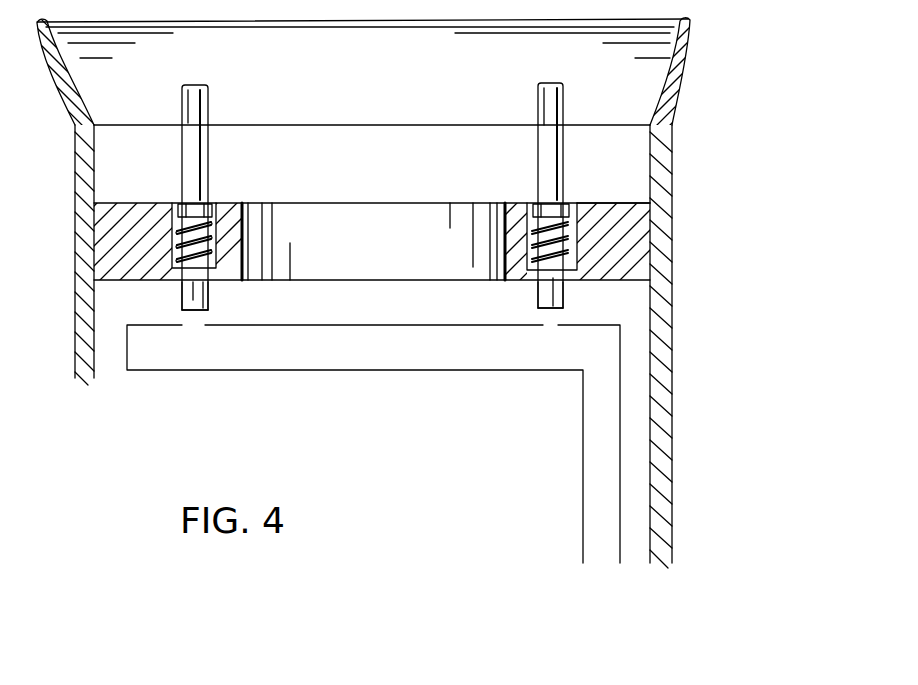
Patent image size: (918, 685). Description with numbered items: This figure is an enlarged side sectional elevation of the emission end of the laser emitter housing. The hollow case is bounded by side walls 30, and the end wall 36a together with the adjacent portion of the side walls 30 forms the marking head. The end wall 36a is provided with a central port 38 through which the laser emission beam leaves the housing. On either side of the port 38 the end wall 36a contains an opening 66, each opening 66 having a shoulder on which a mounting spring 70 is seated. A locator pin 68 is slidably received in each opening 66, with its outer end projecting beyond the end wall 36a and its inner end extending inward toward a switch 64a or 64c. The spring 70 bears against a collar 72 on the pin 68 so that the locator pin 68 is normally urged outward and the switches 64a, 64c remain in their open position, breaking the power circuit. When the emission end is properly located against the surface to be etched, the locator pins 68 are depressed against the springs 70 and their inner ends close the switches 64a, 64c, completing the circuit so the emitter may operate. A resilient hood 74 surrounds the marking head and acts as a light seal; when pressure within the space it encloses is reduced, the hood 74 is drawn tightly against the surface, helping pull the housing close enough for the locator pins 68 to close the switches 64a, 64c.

The side walls 30 is at (672, 407).
The resilient hood 74 is at (678, 52).
The spring 70 is at (596, 226).
The end wall 36a is at (585, 203).
The port 38 is at (393, 258).
The locator pin 68 is at (207, 108).
The collar 72 is at (181, 203).
The switch 64c is at (190, 312).
The opening 66 is at (534, 203).
The switch 64a is at (548, 310).